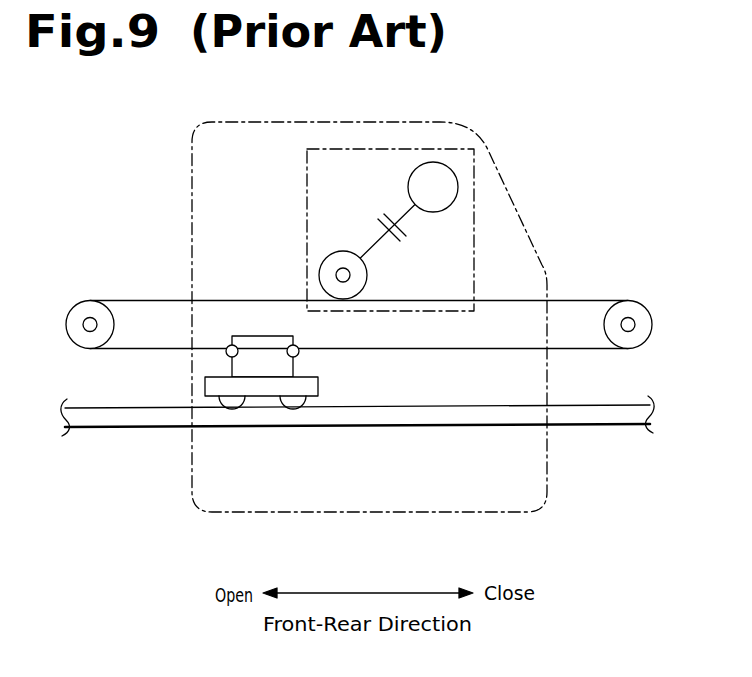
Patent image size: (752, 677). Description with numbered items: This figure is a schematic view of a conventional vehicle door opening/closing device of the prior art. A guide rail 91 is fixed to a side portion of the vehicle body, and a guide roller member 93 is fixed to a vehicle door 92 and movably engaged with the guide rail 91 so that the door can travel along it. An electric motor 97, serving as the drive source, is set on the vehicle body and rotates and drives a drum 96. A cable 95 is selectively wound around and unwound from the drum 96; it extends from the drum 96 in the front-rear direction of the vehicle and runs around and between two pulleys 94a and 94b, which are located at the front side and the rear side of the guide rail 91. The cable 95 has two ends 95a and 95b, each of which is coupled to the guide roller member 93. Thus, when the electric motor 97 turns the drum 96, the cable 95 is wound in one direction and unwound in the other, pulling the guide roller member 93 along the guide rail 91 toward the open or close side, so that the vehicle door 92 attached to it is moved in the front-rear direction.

The guide rail 91 is at (583, 425).
The vehicle door 92 is at (465, 512).
The guide roller member 93 is at (257, 388).
The pulley 94a is at (98, 302).
The pulley 94b is at (635, 300).
The cable 95 is at (258, 300).
The cable end 95a is at (226, 355).
The cable end 95b is at (299, 354).
The drum 96 is at (346, 258).
The electric motor 97 is at (423, 162).